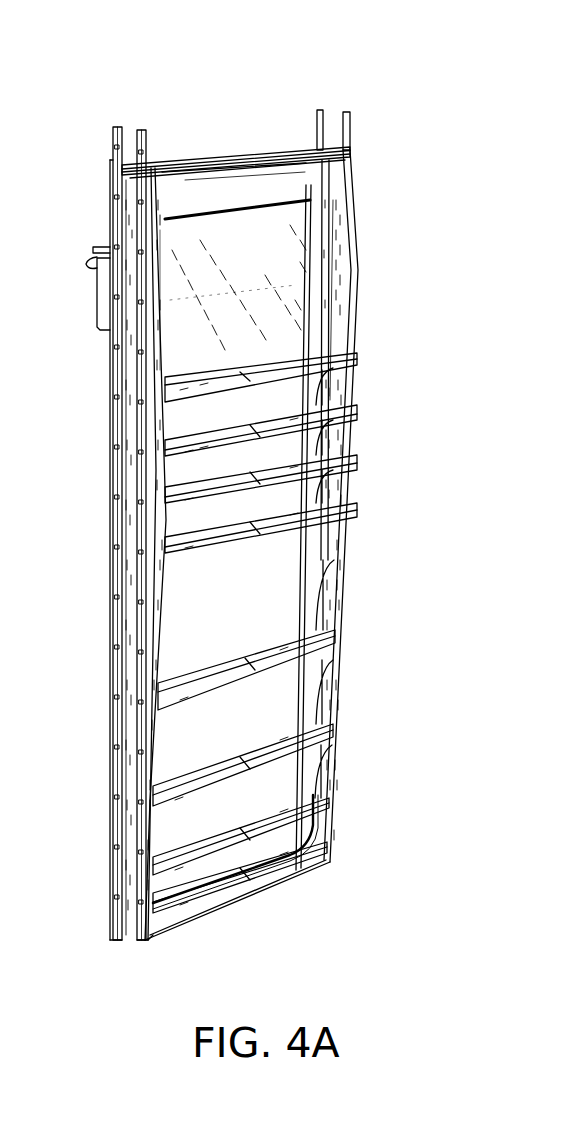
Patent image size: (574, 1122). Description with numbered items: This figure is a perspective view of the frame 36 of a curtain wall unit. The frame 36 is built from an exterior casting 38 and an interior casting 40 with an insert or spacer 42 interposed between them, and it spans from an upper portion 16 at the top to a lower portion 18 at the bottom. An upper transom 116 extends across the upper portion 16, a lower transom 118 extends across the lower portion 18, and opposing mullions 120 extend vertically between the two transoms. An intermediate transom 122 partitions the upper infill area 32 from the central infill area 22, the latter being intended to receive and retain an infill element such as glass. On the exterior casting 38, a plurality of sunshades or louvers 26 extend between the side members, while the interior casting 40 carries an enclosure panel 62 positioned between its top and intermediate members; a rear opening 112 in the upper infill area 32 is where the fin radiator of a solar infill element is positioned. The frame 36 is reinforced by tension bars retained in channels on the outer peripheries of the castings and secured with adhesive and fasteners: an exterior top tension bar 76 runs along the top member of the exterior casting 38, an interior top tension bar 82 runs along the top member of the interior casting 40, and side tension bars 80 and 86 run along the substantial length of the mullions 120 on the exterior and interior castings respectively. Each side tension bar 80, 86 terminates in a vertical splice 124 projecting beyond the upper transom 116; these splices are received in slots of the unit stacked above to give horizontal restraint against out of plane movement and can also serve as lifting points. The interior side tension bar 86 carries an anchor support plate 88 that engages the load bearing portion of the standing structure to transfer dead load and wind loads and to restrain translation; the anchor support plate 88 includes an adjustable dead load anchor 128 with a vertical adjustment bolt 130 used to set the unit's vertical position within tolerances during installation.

The upper portion 16 is at (244, 192).
The lower portion 18 is at (280, 893).
The central infill area 22 is at (280, 580).
The sunshades or louvers 26 is at (333, 505).
The upper infill area 32 is at (278, 190).
The frame 36 is at (473, 218).
The exterior casting 38 is at (358, 178).
The interior casting 40 is at (100, 220).
The insert or spacer 42 is at (320, 213).
The enclosure panel 62 is at (268, 283).
The exterior top reinforcement or tension bar 76 is at (248, 150).
The exterior side reinforcement or tension bar 80 is at (133, 558).
The interior top reinforcement or tension bar 82 is at (179, 155).
The interior side reinforcement or tension bar 86 is at (110, 438).
The anchor support plate 88 is at (103, 297).
The rear opening 112 is at (170, 217).
The upper transom 116 is at (205, 174).
The lower transom 118 is at (300, 857).
The mullion 120 is at (347, 294).
The intermediate transom 122 is at (330, 366).
The vertical splice 124 is at (376, 95).
The adjustable dead load anchor 128 is at (87, 263).
The vertical adjustment bolt 130 is at (96, 250).